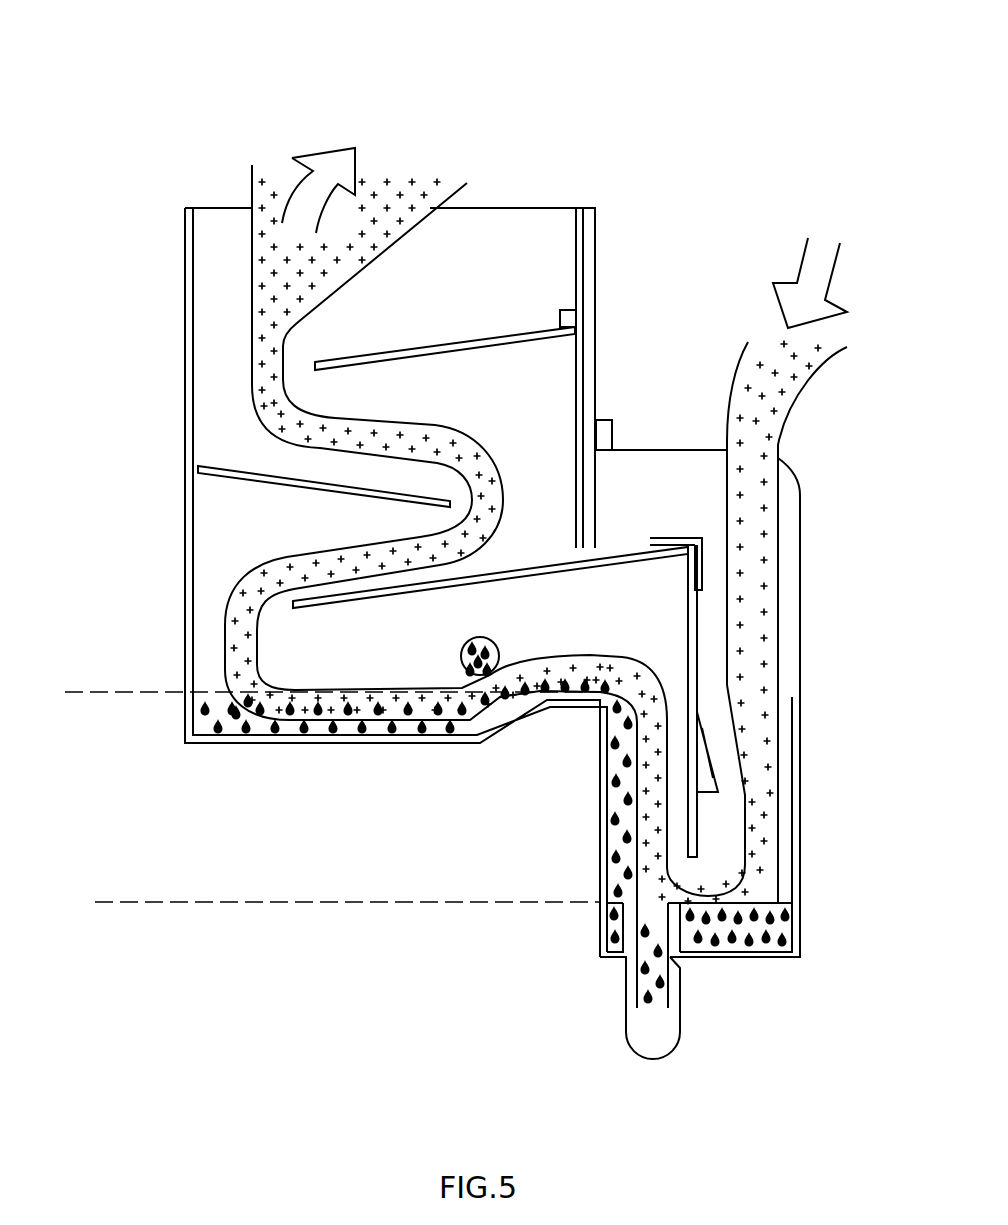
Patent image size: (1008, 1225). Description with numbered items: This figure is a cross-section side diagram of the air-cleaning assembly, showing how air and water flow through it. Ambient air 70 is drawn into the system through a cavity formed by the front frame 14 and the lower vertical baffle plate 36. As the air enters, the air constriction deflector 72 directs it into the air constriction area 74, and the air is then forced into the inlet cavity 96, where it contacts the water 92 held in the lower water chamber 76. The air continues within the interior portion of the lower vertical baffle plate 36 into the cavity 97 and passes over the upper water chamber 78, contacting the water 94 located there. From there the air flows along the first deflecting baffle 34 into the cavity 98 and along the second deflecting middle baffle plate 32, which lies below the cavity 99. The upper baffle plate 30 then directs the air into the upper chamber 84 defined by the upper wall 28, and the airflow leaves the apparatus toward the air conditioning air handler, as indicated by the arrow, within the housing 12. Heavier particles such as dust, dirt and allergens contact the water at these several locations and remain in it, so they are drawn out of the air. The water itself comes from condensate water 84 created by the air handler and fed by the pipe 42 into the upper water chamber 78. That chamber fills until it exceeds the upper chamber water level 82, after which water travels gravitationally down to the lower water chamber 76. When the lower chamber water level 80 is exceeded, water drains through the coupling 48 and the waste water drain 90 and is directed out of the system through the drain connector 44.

The housing 12 is at (185, 240).
The front frame 14 is at (800, 548).
The upper wall 28 is at (585, 245).
The upper baffle plate 30 is at (517, 343).
The second deflecting middle baffle plate 32 is at (250, 480).
The first deflecting baffle 34 is at (623, 552).
The lower vertical baffle plate 36 is at (722, 632).
The pipe 42 is at (468, 640).
The drain connector 44 is at (625, 1042).
The coupling 48 is at (630, 924).
The ambient air 70 is at (546, 167).
The air constriction deflector 72 is at (722, 742).
The air constriction area 74 is at (725, 758).
The lower water chamber 76 is at (793, 932).
The upper water chamber 78 is at (273, 725).
The lower chamber water level 80 is at (120, 902).
The upper chamber water level 82 is at (88, 692).
The upper chamber 84 is at (480, 640).
The waste water drain 90 is at (640, 962).
The water 92 is at (762, 937).
The water 94 is at (237, 710).
The inlet cavity 96 is at (717, 853).
The cavity 97 is at (722, 667).
The cavity 98 is at (294, 512).
The cavity 99 is at (465, 380).